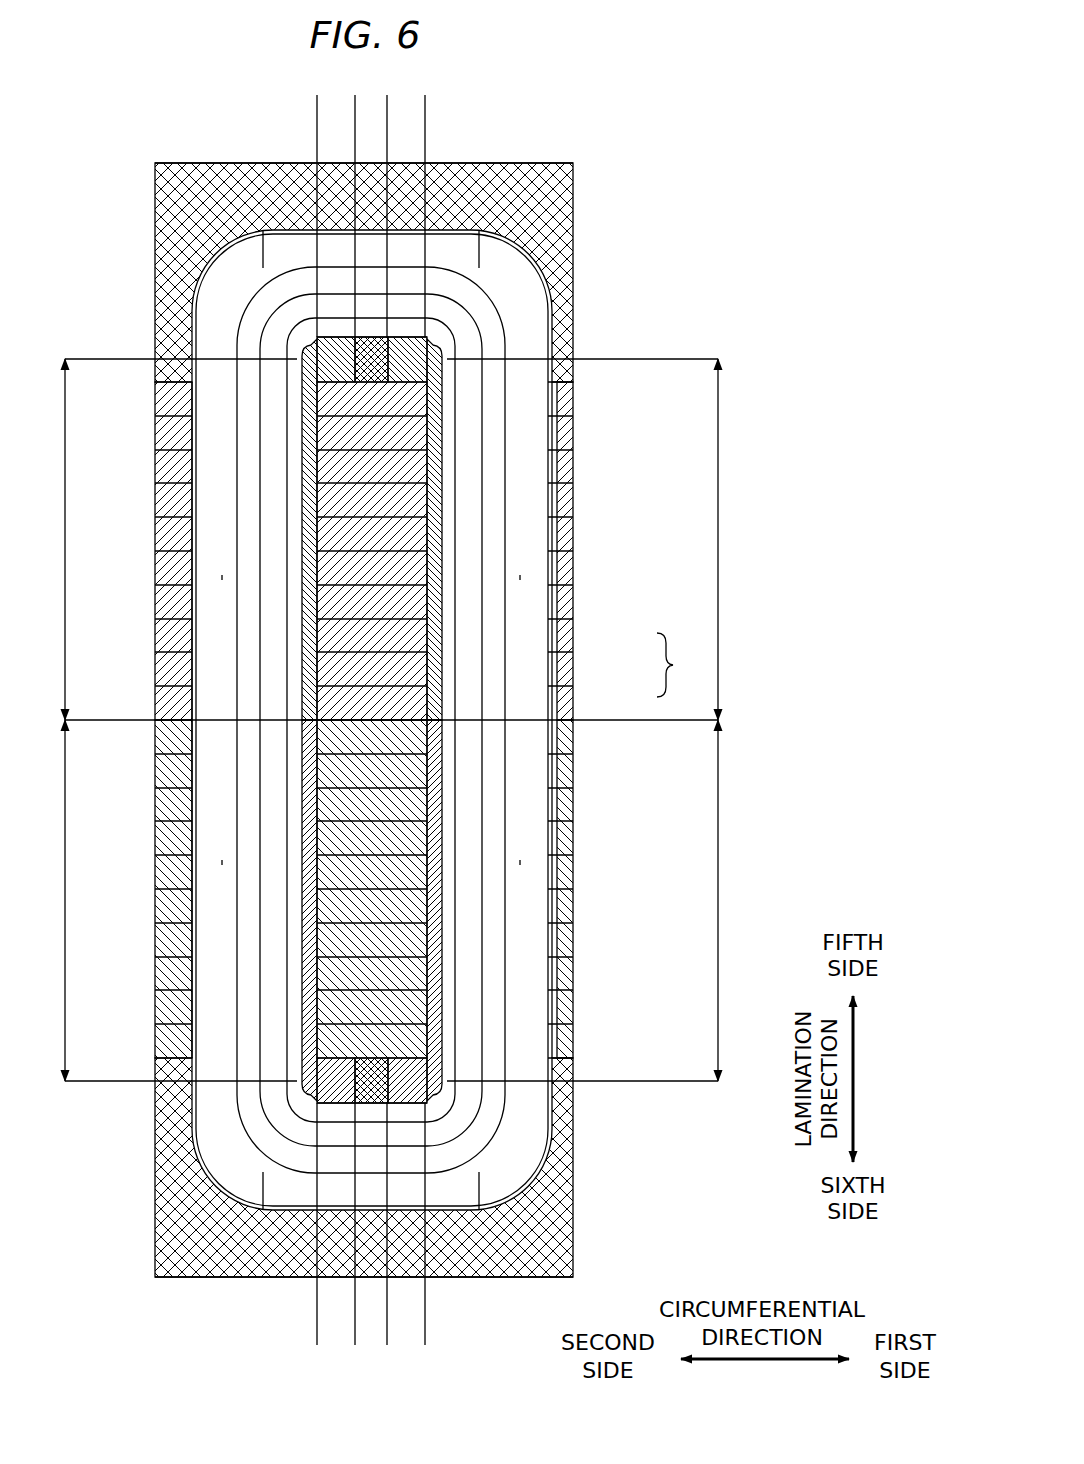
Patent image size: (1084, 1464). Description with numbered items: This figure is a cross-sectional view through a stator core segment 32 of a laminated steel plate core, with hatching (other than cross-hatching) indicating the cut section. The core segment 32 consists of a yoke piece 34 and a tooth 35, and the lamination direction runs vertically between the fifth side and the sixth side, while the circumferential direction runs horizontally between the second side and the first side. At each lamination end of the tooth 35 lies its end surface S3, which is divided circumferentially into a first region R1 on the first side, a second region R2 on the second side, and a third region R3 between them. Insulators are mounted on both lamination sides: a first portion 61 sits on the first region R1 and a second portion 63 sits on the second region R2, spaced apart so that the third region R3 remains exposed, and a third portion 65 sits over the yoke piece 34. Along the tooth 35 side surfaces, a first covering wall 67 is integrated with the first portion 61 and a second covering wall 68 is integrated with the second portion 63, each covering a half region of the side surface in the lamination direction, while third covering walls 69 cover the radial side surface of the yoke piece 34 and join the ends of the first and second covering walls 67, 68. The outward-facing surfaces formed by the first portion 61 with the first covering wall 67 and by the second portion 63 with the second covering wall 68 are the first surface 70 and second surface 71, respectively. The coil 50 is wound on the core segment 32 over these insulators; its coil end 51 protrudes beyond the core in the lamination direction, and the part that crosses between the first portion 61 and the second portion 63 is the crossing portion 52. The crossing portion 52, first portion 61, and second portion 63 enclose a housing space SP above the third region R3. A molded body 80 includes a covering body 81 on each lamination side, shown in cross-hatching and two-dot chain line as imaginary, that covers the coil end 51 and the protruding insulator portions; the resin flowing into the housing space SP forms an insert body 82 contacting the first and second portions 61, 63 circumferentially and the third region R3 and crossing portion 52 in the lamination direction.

The molded body 80 is at (138, 150).
The covering body 81 is at (200, 162).
The third portion 65 is at (305, 228).
The second portion 63 is at (273, 230).
The coil end 51 is at (248, 290).
The coil 50 is at (220, 350).
The crossing portion 52 is at (373, 266).
The insert body 82 is at (371, 340).
The first portion 61 is at (417, 340).
The housing space SP is at (386, 360).
The second covering wall 68 is at (307, 533).
The first covering wall 67 is at (430, 530).
The third covering wall 69 is at (220, 578).
The yoke piece 34 is at (567, 640).
The tooth 35 is at (373, 668).
The core segment 32 is at (685, 665).
The second surface 71 is at (65, 500).
The first surface 70 is at (718, 537).
The end surface of the tooth S3 is at (317, 102).
The first region R1 is at (487, 146).
The second region R2 is at (317, 146).
The third region R3 is at (355, 146).